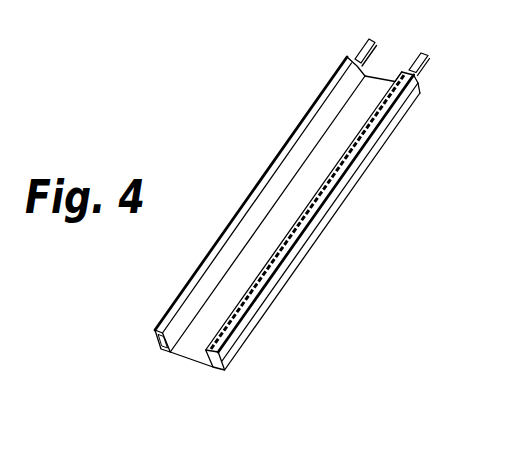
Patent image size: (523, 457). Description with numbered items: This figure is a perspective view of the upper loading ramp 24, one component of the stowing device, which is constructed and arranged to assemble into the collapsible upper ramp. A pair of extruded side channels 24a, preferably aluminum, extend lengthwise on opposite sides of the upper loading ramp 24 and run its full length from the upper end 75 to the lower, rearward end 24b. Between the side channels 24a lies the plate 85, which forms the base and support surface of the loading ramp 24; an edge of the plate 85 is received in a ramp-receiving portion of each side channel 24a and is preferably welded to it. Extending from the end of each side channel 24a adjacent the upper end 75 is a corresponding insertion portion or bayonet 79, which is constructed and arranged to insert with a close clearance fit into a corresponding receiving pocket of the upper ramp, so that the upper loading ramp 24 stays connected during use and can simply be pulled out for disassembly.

The upper loading ramp 24 is at (315, 205).
The side channels 24a is at (188, 278).
The lower end 24b is at (190, 360).
The upper end 75 is at (386, 76).
The bayonet 79 is at (366, 42).
The plate 85 is at (303, 200).